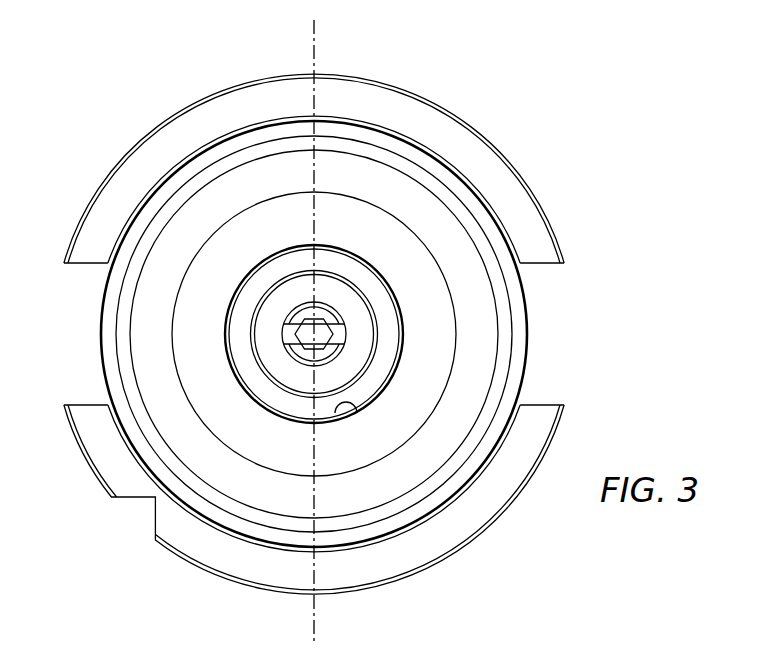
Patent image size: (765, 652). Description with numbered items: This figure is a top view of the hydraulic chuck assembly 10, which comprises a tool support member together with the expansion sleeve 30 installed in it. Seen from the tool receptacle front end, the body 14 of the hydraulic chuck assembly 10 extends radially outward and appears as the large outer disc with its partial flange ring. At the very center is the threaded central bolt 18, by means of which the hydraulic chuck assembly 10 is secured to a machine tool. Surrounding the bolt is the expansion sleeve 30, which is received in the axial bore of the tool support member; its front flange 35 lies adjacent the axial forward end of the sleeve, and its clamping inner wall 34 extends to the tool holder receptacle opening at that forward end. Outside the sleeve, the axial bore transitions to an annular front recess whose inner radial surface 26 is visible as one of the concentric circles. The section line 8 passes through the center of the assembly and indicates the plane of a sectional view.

The section line 8 is at (245, 628).
The hydraulic chuck assembly 10 is at (632, 93).
The body 14 is at (507, 226).
The threaded central bolt 18 is at (290, 331).
The inner radial surface 26 is at (438, 403).
The expansion sleeve 30 is at (377, 241).
The clamping inner wall 34 is at (357, 408).
The front flange 35 is at (424, 336).